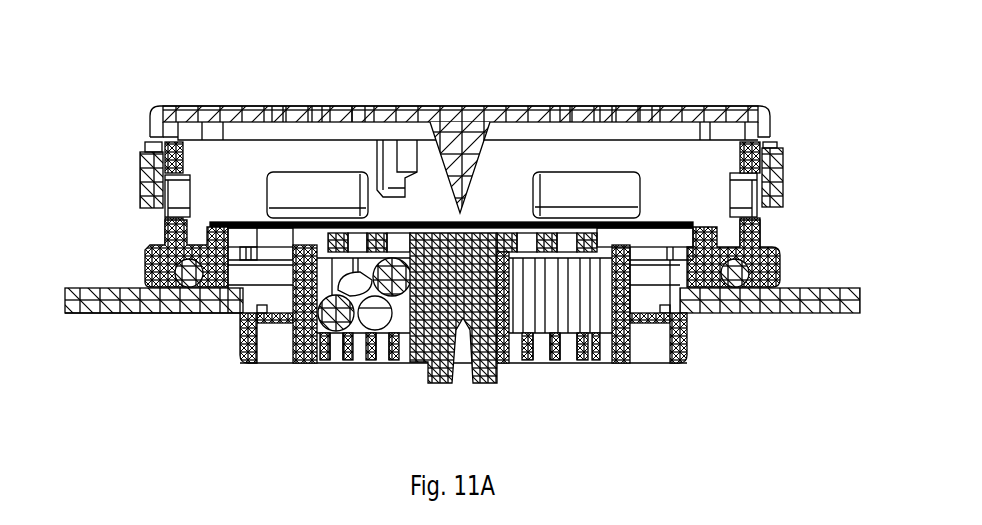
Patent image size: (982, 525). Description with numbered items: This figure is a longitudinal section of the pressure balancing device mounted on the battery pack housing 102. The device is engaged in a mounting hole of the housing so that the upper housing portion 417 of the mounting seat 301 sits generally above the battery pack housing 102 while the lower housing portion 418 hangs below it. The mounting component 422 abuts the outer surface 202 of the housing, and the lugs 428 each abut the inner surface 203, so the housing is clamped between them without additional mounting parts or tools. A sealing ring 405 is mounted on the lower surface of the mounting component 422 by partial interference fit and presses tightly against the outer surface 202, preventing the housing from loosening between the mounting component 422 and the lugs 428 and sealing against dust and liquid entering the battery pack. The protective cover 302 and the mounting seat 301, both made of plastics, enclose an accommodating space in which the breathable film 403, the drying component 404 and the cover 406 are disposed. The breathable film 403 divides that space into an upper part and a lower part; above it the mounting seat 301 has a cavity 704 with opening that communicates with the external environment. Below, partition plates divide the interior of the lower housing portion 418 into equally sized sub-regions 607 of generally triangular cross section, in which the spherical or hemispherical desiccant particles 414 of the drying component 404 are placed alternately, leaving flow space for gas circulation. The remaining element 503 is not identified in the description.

The battery pack housing 102 is at (78, 307).
The outer surface 202 is at (85, 287).
The inner surface 203 is at (203, 313).
The mounting seat 301 is at (165, 218).
The protective cover 302 is at (597, 108).
The breathable film 403 is at (675, 222).
The drying component 404 is at (372, 330).
The sealing ring 405 is at (188, 288).
The cover 406 is at (487, 233).
The desiccant particles 414 is at (322, 322).
The upper housing portion 417 is at (783, 158).
The lower housing portion 418 is at (293, 345).
The mounting component 422 is at (783, 253).
The lugs 428 is at (687, 350).
The right housing portion 503 is at (632, 335).
The sub-regions 607 is at (577, 320).
The cavity 704 is at (277, 157).